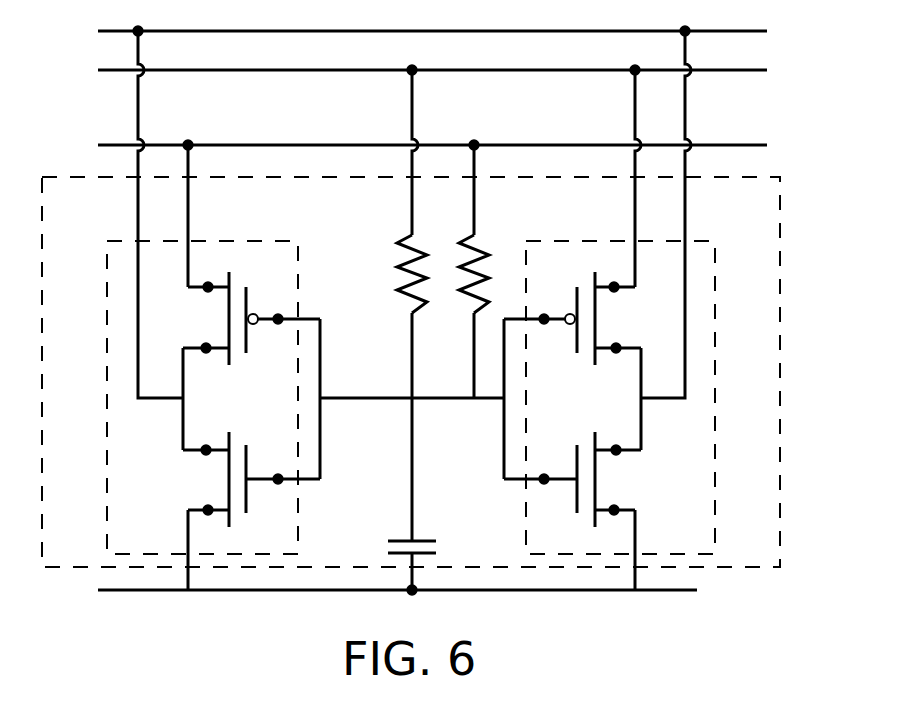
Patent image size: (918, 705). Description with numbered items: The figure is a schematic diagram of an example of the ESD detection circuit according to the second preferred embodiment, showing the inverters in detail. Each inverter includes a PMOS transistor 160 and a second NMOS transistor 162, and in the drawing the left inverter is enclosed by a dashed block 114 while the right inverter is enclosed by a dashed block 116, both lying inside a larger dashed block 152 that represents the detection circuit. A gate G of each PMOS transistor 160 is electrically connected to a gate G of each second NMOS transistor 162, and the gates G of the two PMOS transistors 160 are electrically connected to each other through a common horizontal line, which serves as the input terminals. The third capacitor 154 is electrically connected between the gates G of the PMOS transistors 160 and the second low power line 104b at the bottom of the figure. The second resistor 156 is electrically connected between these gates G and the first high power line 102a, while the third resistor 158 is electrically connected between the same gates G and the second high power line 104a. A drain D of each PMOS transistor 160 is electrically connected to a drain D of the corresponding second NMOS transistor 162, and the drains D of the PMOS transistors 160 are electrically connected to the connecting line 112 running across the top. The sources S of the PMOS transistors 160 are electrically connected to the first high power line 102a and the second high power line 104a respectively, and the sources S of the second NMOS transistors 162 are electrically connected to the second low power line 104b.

The connecting line 112 is at (745, 30).
The first high power line 102a is at (745, 68).
The second high power line 104a is at (745, 145).
The second low power line 104b is at (677, 592).
The driver circuit 152 is at (780, 186).
The first switching unit 114 is at (118, 240).
The second switching unit 116 is at (705, 240).
The third capacitor 154 is at (398, 545).
The second resistor 156 is at (400, 248).
The third resistor 158 is at (481, 243).
The PMOS transistor 160 is at (238, 283).
The second NMOS transistor 162 is at (238, 515).